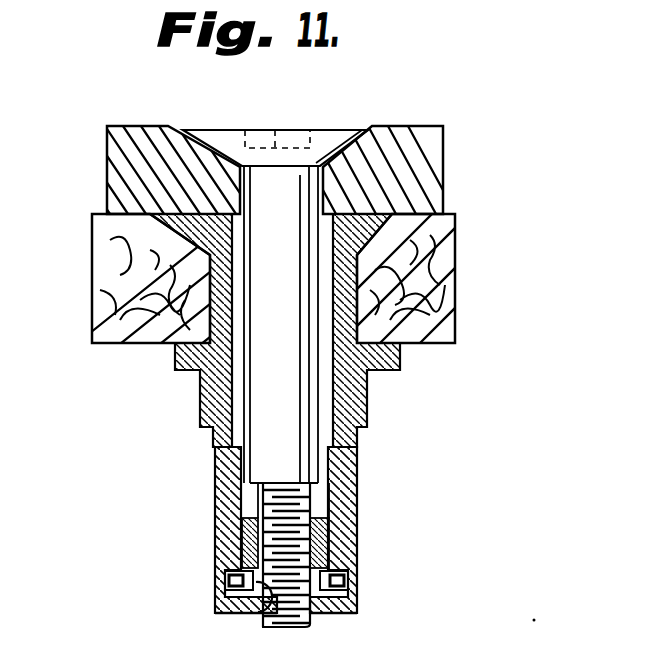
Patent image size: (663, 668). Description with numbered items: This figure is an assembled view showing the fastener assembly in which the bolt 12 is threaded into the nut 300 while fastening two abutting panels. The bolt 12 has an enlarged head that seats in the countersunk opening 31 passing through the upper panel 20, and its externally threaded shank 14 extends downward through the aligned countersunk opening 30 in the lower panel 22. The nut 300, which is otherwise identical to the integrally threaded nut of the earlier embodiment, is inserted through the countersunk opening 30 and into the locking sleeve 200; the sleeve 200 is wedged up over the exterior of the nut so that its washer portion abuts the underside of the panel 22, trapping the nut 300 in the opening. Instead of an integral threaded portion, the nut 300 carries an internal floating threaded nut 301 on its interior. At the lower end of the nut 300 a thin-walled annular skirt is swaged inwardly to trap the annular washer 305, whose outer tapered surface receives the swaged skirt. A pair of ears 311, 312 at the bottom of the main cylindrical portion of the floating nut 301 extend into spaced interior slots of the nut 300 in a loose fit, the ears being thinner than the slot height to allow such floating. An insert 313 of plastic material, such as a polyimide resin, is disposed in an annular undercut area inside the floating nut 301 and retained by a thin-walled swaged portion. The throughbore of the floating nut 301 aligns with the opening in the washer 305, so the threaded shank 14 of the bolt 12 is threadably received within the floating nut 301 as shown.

The bolt 12 is at (367, 112).
The externally threaded shank 14 is at (232, 537).
The panel 20 is at (137, 138).
The panel 22 is at (118, 280).
The countersunk opening 30 is at (160, 178).
The countersunk opening 31 is at (238, 127).
The locking sleeve 200 is at (193, 393).
The nut 300 is at (211, 477).
The internal floating threaded nut 301 is at (330, 512).
The annular washer 305 is at (320, 613).
The ear 311 is at (224, 582).
The ear 312 is at (347, 580).
The insert 313 is at (262, 614).